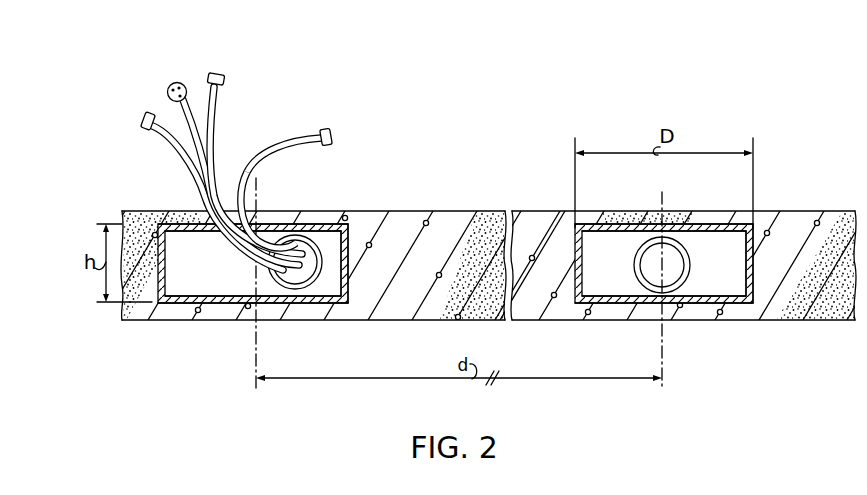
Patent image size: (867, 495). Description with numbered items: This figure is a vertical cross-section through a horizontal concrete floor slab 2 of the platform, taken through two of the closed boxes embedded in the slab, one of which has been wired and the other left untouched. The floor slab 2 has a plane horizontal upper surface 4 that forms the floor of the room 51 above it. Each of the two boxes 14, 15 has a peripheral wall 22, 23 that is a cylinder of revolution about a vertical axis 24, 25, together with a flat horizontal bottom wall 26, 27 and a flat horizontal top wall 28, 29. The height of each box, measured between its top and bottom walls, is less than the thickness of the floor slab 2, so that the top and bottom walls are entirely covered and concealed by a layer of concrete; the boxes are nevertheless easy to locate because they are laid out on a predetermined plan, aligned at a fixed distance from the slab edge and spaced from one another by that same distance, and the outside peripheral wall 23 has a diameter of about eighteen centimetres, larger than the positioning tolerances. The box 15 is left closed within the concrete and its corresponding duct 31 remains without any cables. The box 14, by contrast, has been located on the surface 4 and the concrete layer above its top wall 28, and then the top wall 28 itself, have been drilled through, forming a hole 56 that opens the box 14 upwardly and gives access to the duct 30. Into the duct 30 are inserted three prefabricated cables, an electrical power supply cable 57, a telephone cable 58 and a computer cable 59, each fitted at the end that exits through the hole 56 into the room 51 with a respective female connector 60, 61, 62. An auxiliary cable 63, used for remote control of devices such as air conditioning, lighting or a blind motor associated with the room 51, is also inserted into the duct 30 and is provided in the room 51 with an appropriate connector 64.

The floor slab 2 is at (426, 304).
The upper surface 4 is at (464, 210).
The room 51 is at (429, 187).
The box 14 is at (284, 305).
The top wall 28 is at (336, 222).
The bottom wall 26 is at (331, 305).
The peripheral wall 22 is at (350, 257).
The duct 30 is at (270, 270).
The box 15 is at (633, 303).
The top wall 29 is at (603, 220).
The bottom wall 27 is at (593, 304).
The peripheral wall 23 is at (757, 257).
The duct 31 is at (691, 263).
The vertical axis 24 is at (253, 338).
The vertical axis 25 is at (666, 334).
The hole 56 is at (257, 209).
The electrical power supply cable 57 is at (185, 115).
The telephone cable 58 is at (173, 157).
The computer cable 59 is at (280, 146).
The auxiliary cable 63 is at (214, 100).
The female connector 60 is at (178, 82).
The female connector 61 is at (141, 121).
The female connector 62 is at (332, 133).
The connector 64 is at (221, 72).